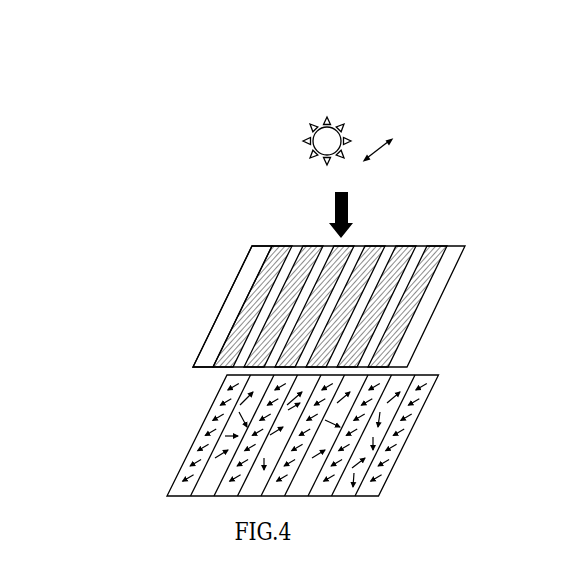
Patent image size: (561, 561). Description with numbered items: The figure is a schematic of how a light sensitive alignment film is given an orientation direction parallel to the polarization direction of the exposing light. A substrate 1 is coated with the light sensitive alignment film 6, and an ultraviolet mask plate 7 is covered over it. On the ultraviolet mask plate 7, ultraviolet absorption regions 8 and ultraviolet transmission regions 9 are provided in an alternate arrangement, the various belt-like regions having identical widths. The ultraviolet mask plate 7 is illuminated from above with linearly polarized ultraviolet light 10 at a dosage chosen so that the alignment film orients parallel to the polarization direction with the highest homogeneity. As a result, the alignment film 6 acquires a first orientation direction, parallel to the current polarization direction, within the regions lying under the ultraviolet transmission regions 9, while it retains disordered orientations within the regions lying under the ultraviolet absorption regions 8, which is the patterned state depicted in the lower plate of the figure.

The substrate 1 is at (167, 487).
The light sensitive alignment film 6 is at (210, 403).
The ultraviolet mask plate 7 is at (200, 344).
The ultraviolet absorption regions 8 is at (280, 245).
The ultraviolet transmission regions 9 is at (230, 301).
The linearly polarized ultraviolet light 10 is at (355, 108).